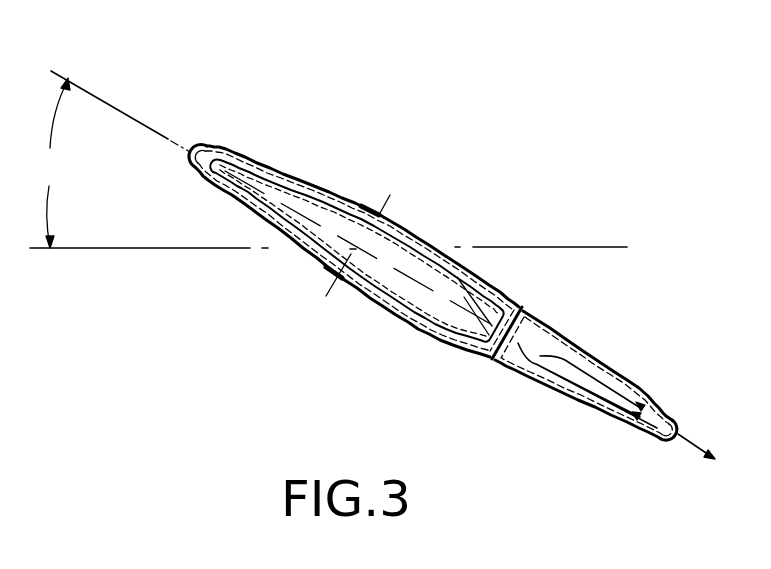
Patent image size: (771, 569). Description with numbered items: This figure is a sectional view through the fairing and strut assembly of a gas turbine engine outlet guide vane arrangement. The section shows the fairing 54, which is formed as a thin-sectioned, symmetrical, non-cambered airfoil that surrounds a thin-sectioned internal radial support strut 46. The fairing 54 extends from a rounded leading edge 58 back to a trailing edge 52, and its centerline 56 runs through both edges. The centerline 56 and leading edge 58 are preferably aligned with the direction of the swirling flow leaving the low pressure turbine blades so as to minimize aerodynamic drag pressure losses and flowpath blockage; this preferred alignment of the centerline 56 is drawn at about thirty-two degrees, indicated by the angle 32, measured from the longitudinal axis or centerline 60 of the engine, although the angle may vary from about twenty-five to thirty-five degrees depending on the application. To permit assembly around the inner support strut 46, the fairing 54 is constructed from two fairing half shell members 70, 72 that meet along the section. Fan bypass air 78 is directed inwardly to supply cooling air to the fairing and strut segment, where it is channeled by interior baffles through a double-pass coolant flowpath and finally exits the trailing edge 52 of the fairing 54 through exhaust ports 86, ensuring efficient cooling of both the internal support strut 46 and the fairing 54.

The angle of alignment 32 is at (60, 163).
The internal radial support strut 46 is at (232, 204).
The trailing edge 52 is at (676, 421).
The fairing 54 is at (352, 158).
The centerline 56 is at (58, 70).
The leading edge 58 is at (188, 160).
The longitudinal axis 60 is at (612, 248).
The fairing half shell member 70 is at (264, 164).
The fairing half shell member 72 is at (511, 303).
The fan bypass air 78 is at (212, 142).
The exhaust ports 86 is at (674, 440).